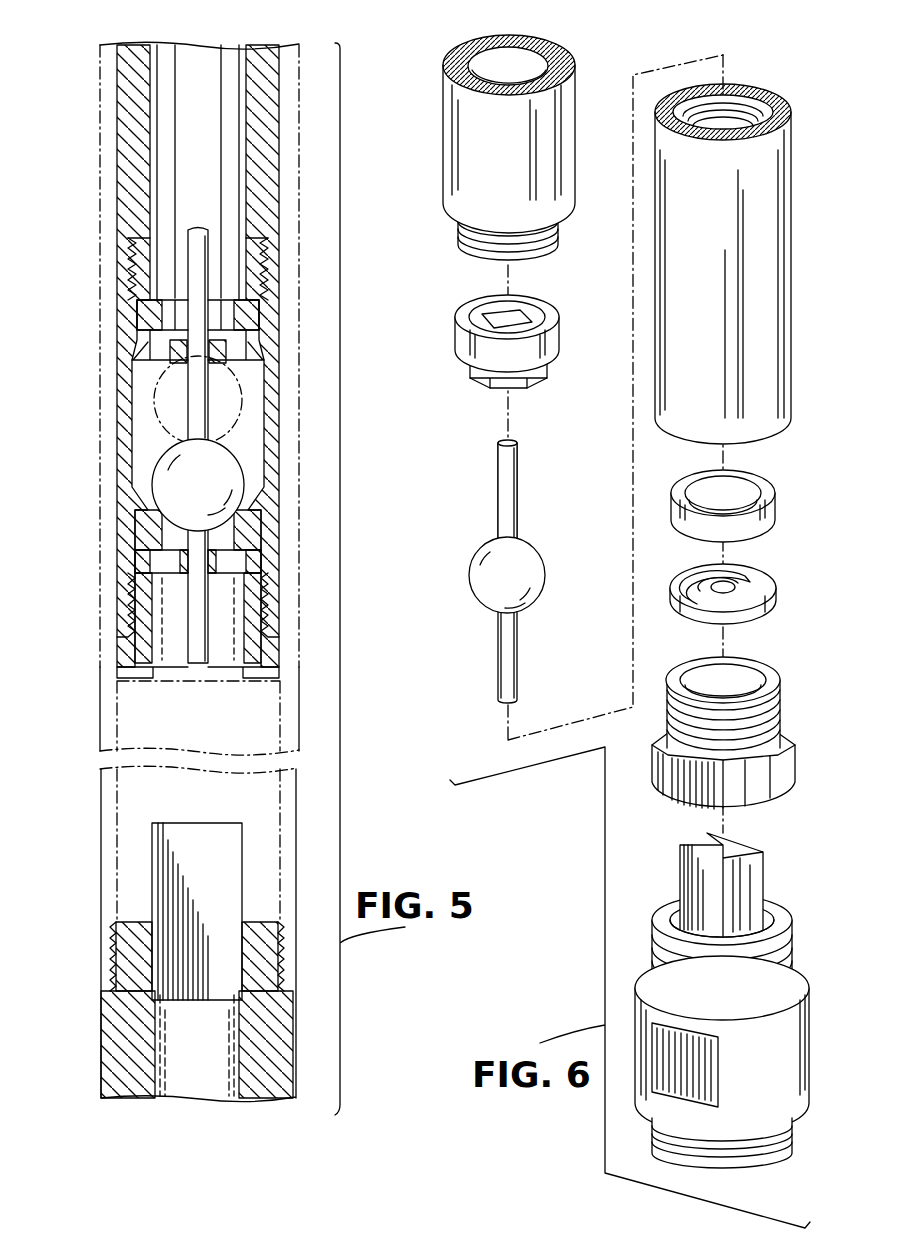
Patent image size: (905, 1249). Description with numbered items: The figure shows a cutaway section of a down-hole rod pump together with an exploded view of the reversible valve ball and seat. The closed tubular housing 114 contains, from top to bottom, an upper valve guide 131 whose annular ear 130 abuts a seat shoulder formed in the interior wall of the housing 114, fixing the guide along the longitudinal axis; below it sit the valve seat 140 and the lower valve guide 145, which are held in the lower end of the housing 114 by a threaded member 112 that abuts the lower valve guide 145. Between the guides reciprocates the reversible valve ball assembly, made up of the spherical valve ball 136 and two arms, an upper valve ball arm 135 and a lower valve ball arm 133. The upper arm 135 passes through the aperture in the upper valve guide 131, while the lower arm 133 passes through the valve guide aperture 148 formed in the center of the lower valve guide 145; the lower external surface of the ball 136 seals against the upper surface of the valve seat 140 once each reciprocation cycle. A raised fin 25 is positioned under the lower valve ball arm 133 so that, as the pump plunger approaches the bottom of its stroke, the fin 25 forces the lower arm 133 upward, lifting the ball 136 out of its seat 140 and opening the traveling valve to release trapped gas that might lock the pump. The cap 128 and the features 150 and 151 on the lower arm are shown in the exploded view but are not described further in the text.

In FIG. 5, the fin 25 is at (184, 861).
In FIG. 6, the fin 25 is at (738, 885).
In FIG. 6, the member 112 is at (793, 770).
In FIG. 6, the tubular housing 114 is at (770, 307).
In FIG. 6, the cap 128 is at (457, 153).
In FIG. 6, the annular ear 130 is at (537, 300).
In FIG. 6, the upper valve guide 131 is at (548, 372).
In FIG. 5, the lower valve ball arm 133 is at (192, 613).
In FIG. 6, the lower valve ball arm 133 is at (507, 675).
In FIG. 5, the upper valve ball arm 135 is at (190, 390).
In FIG. 6, the upper valve ball arm 135 is at (512, 490).
In FIG. 5, the valve ball 136 is at (172, 460).
In FIG. 6, the valve ball 136 is at (527, 565).
In FIG. 6, the valve seat 140 is at (777, 510).
In FIG. 6, the lower valve guide 145 is at (758, 584).
In FIG. 6, the valve guide aperture 148 is at (757, 565).
In FIG. 6, the flat face 150 is at (518, 640).
In FIG. 6, the pin shank 151 is at (507, 653).